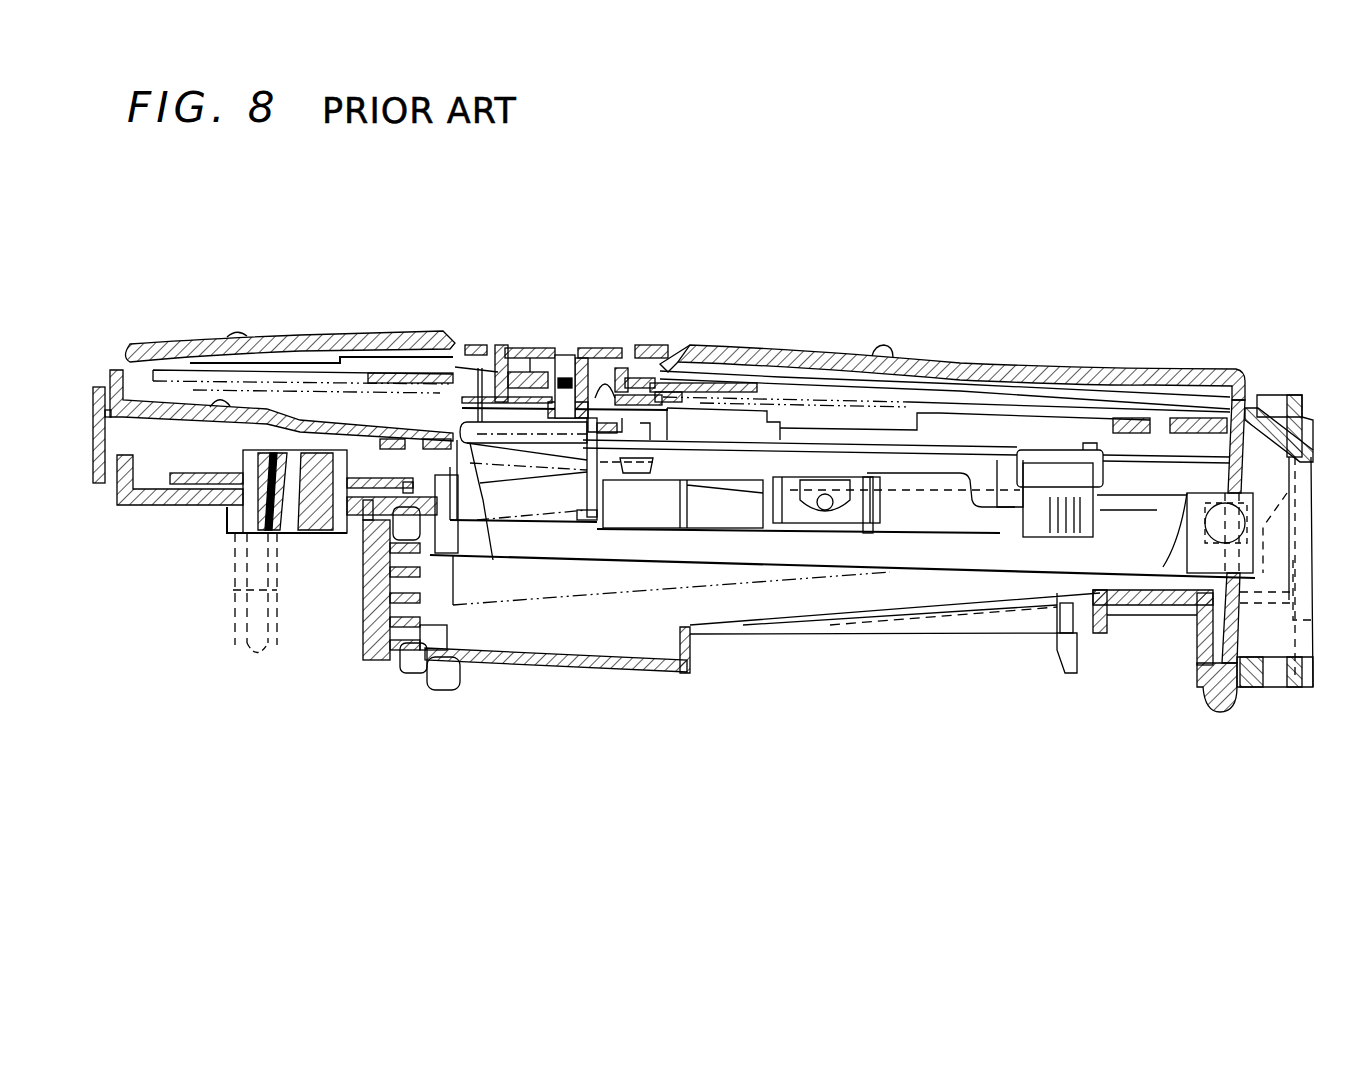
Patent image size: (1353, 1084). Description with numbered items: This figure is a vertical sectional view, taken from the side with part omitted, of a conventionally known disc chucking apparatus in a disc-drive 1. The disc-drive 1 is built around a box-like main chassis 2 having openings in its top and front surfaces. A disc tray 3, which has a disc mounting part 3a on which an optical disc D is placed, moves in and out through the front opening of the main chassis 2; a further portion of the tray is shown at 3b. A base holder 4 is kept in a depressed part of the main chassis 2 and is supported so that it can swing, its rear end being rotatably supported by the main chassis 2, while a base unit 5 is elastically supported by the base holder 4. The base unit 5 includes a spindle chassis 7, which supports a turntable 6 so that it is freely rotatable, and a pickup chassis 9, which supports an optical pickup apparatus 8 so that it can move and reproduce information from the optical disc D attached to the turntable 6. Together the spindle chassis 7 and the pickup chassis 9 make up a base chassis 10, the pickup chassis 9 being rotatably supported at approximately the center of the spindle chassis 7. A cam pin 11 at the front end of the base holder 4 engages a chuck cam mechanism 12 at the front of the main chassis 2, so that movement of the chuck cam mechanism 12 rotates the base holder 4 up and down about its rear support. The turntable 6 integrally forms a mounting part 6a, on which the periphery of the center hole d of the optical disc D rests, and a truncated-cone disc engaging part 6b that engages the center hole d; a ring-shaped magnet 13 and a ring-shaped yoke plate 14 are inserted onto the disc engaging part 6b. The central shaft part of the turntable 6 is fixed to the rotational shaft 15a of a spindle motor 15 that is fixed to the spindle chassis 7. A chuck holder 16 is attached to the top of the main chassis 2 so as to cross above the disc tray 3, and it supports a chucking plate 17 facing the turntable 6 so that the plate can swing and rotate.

The disc-drive 1 is at (955, 241).
The main chassis 2 is at (648, 672).
The disc tray 3 is at (190, 407).
The disc mounting part 3a is at (228, 404).
The cover inner wall 3b is at (440, 428).
The base holder 4 is at (478, 545).
The base unit 5 is at (558, 556).
The turntable 6 is at (608, 347).
The mounting part 6a is at (477, 347).
The disc engaging part 6b is at (655, 347).
The spindle chassis 7 is at (950, 515).
The optical pickup apparatus 8 is at (707, 427).
The pickup chassis 9 is at (1003, 473).
The base chassis 10 is at (985, 716).
The cam pin 11 is at (373, 577).
The chuck cam mechanism 12 is at (360, 540).
The ring-shaped magnet 13 is at (540, 347).
The ring-shaped yoke plate 14 is at (590, 347).
The spindle motor 15 is at (470, 400).
The rotational shaft 15a is at (568, 347).
The chuck holder 16 is at (348, 335).
The chucking plate 17 is at (675, 347).
The optical disc D is at (897, 357).
The center hole d is at (530, 347).